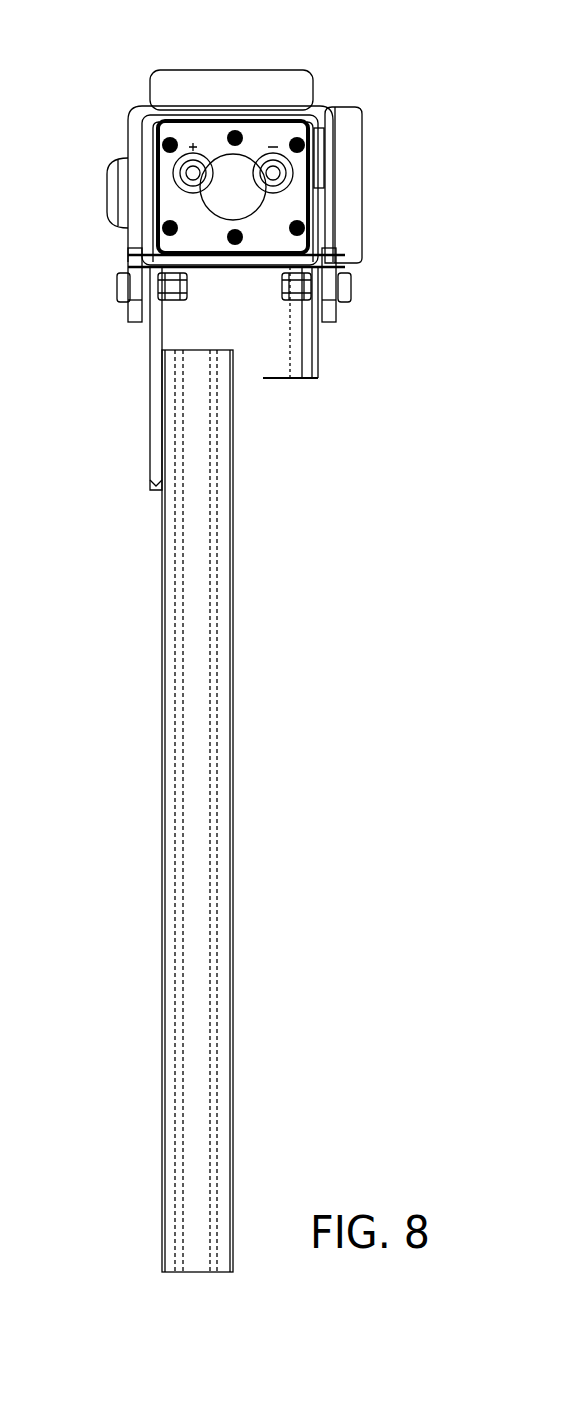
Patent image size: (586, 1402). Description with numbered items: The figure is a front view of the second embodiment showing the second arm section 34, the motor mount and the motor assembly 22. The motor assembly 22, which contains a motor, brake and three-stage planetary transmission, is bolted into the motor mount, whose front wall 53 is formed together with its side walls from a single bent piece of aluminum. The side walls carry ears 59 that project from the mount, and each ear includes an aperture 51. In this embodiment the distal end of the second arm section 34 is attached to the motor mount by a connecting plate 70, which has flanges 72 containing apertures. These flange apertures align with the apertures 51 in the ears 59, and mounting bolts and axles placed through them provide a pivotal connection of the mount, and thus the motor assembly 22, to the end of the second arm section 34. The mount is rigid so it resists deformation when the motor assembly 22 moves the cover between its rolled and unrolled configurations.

The motor assembly 22 is at (263, 138).
The second arm section 34 is at (197, 745).
The aperture 51 is at (123, 308).
The front wall 53 is at (232, 80).
The ears 59 is at (128, 260).
The connecting plate 70 is at (263, 382).
The flanges 72 is at (317, 343).